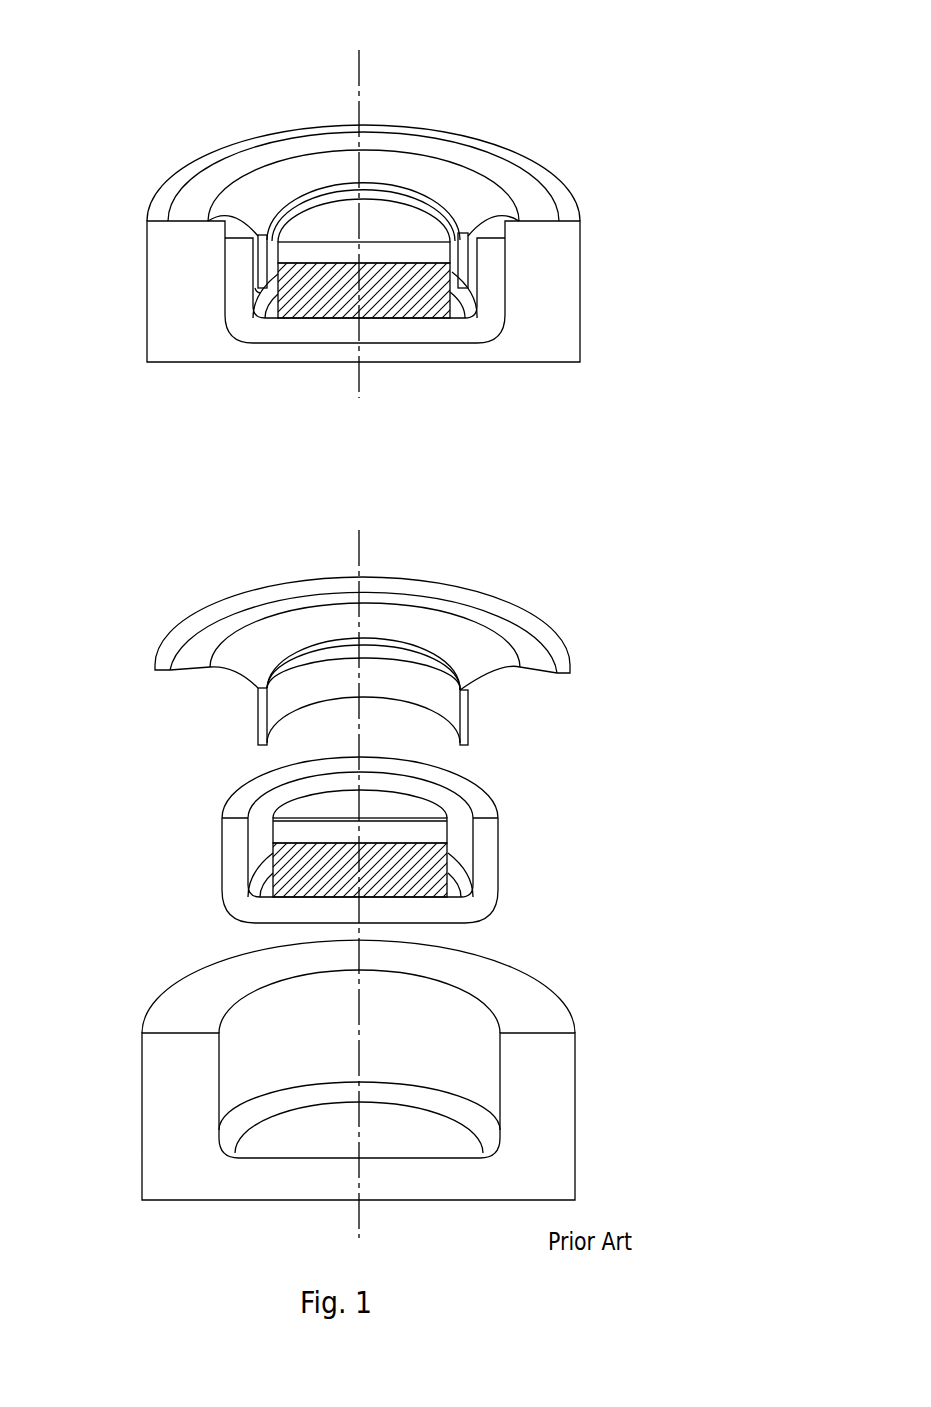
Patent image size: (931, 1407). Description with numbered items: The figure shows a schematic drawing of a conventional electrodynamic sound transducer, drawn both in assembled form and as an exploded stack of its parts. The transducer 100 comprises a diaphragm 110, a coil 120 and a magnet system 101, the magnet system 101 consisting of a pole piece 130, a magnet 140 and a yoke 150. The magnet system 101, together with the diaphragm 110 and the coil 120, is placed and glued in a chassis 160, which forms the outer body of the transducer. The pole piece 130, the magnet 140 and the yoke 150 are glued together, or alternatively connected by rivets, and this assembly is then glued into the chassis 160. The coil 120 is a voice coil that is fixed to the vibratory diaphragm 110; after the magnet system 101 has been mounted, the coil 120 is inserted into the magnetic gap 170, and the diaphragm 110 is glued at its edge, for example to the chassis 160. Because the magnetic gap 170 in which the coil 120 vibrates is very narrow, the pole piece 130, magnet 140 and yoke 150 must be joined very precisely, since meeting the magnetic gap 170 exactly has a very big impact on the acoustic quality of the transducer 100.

The transducer 100 is at (382, 88).
The magnet system 101 is at (422, 330).
The diaphragm 110 is at (285, 157).
The coil 120 is at (465, 263).
The pole piece 130 is at (392, 228).
The magnet 140 is at (458, 844).
The yoke 150 is at (293, 335).
The chassis 160 is at (197, 333).
The magnetic gap 170 is at (252, 288).